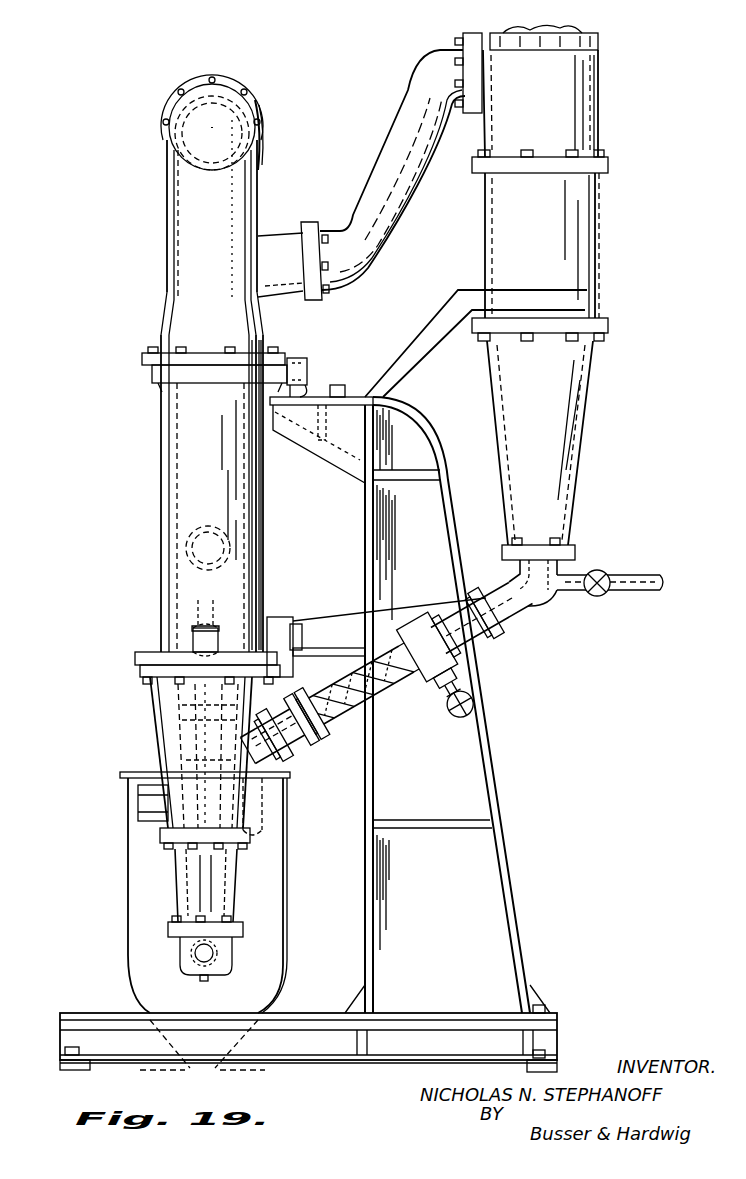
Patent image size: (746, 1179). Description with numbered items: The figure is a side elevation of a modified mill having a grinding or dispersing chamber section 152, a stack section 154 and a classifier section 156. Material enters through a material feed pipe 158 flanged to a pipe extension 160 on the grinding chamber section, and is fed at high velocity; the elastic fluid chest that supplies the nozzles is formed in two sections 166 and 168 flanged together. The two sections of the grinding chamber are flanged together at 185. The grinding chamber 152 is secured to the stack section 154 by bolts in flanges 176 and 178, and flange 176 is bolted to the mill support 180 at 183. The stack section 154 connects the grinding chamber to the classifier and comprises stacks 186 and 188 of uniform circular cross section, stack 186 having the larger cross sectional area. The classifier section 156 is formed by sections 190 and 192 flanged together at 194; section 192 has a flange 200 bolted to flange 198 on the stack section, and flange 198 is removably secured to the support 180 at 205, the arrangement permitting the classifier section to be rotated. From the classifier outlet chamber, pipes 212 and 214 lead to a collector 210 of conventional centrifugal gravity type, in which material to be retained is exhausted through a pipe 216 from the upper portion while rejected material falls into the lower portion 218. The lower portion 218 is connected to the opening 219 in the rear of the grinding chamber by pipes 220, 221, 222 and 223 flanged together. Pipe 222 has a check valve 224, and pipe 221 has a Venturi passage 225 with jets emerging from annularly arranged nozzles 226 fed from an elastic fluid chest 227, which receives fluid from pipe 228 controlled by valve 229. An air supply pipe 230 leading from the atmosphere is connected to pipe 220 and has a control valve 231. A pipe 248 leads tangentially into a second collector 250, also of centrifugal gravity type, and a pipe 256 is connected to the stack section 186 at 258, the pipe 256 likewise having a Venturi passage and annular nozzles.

The grinding or dispersing chamber section 152 is at (123, 757).
The stack section 154 is at (282, 497).
The classifier section 156 is at (118, 247).
The material feed pipe 158 is at (213, 632).
The pipe extension 160 is at (185, 712).
The chest section 166 is at (185, 885).
The chest section 168 is at (182, 957).
The flange 176 is at (135, 657).
The flange 178 is at (138, 673).
The mill support 180 is at (367, 522).
The bolted connection 183 is at (283, 620).
The flanged joint 185 is at (160, 838).
The stack 186 is at (163, 447).
The stack 188 is at (180, 477).
The classifier section part 190 is at (163, 290).
The classifier section part 192 is at (175, 217).
The flange 194 is at (227, 78).
The flange 198 is at (160, 366).
The flange 200 is at (152, 352).
The removable securing point 205 is at (305, 365).
The collector 210 is at (575, 93).
The pipe 212 is at (290, 238).
The pipe 214 is at (368, 180).
The pipe 216 is at (595, 40).
The lower portion of collector 218 is at (578, 483).
The opening 219 is at (246, 790).
The pipe 220 is at (532, 605).
The pipe 221 is at (440, 618).
The pipe 222 is at (300, 735).
The pipe 223 is at (270, 750).
The check valve 224 is at (303, 713).
The Venturi passage 225 is at (358, 705).
The nozzles 226 is at (422, 668).
The elastic fluid chest 227 is at (482, 645).
The pipe 228 is at (470, 665).
The valve 229 is at (455, 717).
The air supply pipe 230 is at (577, 577).
The control valve 231 is at (607, 575).
The pipe 248 is at (153, 820).
The collector 250 is at (283, 850).
The pipe 256 is at (195, 612).
The connection 258 is at (190, 548).